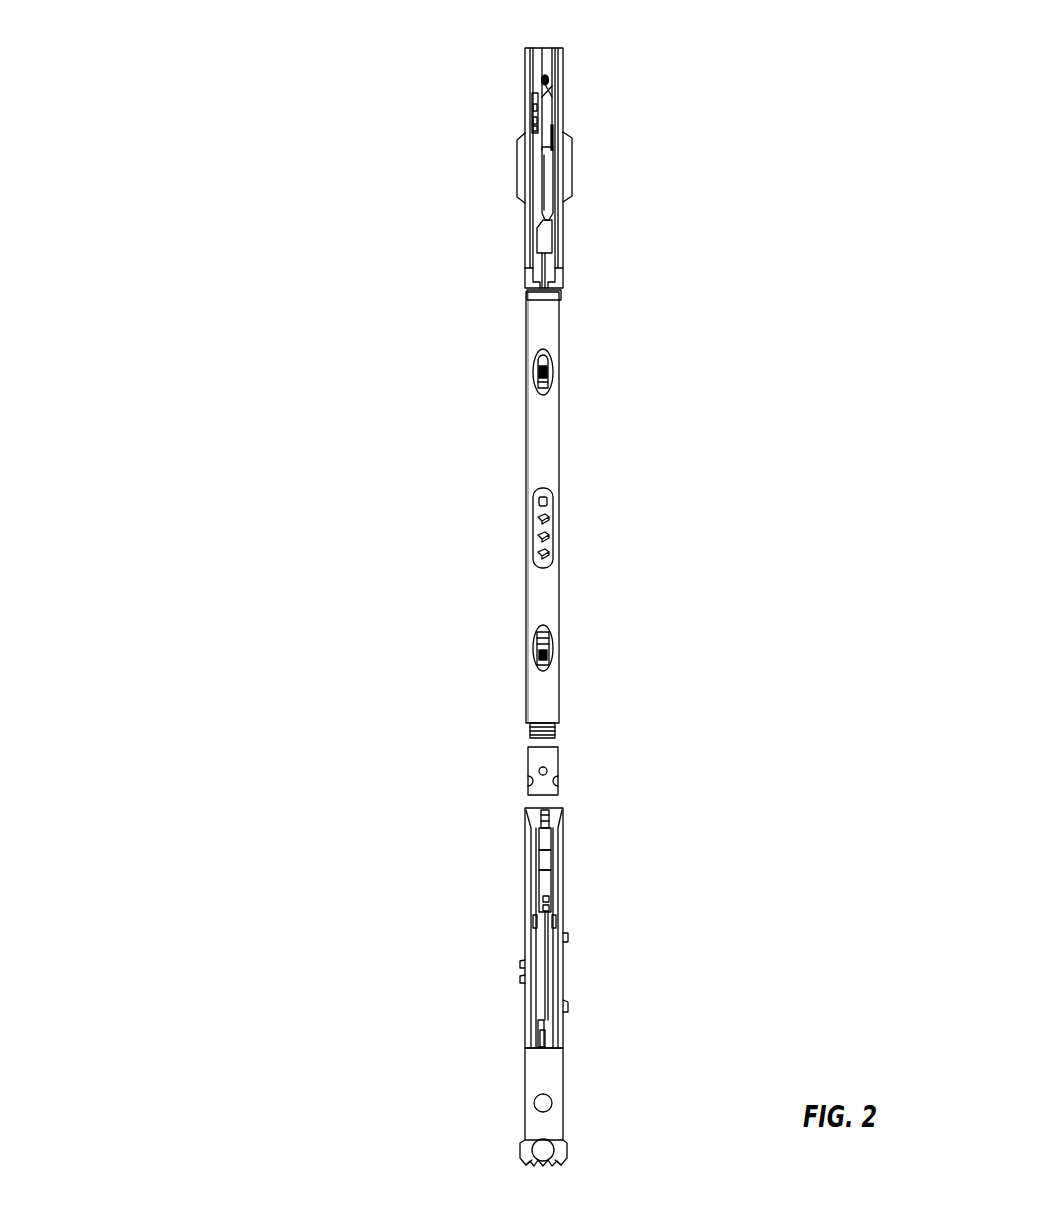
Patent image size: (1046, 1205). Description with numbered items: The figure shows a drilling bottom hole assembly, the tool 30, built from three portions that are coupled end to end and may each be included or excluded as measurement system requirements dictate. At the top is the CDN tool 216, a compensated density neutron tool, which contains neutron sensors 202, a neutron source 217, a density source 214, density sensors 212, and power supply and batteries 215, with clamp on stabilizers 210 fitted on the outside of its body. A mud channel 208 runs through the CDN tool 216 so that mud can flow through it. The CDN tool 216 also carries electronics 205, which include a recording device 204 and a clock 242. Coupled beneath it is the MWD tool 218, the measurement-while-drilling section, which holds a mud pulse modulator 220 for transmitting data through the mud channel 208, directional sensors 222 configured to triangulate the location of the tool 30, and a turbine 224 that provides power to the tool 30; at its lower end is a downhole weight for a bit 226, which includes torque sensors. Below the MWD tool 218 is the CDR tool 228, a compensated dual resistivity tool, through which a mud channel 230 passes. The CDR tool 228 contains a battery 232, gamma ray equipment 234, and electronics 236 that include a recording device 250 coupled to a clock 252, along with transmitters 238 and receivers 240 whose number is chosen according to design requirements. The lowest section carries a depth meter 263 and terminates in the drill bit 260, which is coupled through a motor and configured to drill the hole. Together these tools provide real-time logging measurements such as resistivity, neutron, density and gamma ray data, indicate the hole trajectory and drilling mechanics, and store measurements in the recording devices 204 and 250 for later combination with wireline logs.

The tool 30 is at (122, 75).
The compensated density neutron (CDN) tool 216 is at (183, 278).
The mud channel 208 is at (545, 47).
The neutron source 217 is at (543, 90).
The neutron sensors 202 is at (528, 77).
The electronics 205 is at (535, 100).
The recording device 204 is at (533, 110).
The clock 242 is at (535, 130).
The density source 214 is at (552, 147).
The clamp on stabilizers 210 is at (570, 160).
The density sensors 212 is at (548, 197).
The power supply and batteries 215 is at (659, 254).
The measurement-while-drilling (MWD) tool 218 is at (183, 784).
The modulator 220 is at (553, 370).
The directional sensors 222 is at (553, 530).
The turbine 224 is at (553, 652).
The downhole weight for a bit 226 is at (556, 767).
The compensated dual resistivity (CDR) tool 228 is at (183, 1055).
The mud channel 230 is at (557, 810).
The battery 232 is at (543, 843).
The gamma ray equipment 234 is at (664, 851).
The electronics 236 is at (548, 888).
The recording device 250 is at (549, 900).
The clock 252 is at (549, 915).
The transmitters 238 is at (568, 1003).
The receivers 240 is at (523, 968).
The depth meter 263 is at (552, 1098).
The drill bit 260 is at (556, 1145).